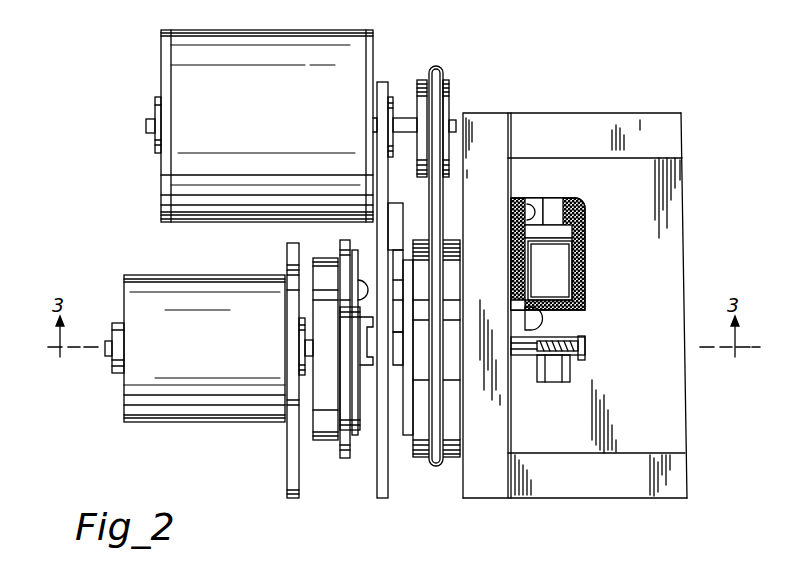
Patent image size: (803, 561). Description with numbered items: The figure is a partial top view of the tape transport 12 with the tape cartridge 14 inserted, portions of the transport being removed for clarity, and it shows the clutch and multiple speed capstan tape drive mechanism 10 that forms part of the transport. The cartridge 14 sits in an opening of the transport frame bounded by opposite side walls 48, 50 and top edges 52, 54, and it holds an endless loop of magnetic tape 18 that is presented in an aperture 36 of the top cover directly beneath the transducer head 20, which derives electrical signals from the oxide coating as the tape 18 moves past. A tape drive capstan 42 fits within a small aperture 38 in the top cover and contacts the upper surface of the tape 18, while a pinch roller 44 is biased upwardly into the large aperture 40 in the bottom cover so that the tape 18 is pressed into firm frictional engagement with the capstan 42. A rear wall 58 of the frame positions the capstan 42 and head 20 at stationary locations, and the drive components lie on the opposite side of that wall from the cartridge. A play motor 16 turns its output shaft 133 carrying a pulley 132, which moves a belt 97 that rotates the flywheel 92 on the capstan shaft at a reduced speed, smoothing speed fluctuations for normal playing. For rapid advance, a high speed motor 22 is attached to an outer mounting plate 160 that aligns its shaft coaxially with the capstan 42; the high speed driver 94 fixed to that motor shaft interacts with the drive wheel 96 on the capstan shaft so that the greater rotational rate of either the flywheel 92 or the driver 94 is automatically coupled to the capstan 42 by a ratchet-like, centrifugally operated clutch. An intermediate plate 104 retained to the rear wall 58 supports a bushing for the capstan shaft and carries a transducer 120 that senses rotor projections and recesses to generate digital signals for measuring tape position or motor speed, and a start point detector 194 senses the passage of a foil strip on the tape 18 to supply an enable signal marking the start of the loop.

The clutch and multiple speed capstan tape drive mechanism 10 is at (337, 492).
The tape transport 12 is at (490, 128).
The tape cartridge 14 is at (573, 314).
The play motor 16 is at (162, 72).
The magnetic tape 18 is at (552, 210).
The transducer head 20 is at (557, 288).
The rapid advance motor 22 is at (205, 410).
The aperture 36 is at (570, 232).
The small aperture 38 is at (570, 368).
The large aperture 40 is at (572, 361).
The tape drive capstan 42 is at (580, 348).
The pinch roller 44 is at (560, 343).
The side wall 48 is at (642, 498).
The side wall 50 is at (597, 292).
The top edge 52 is at (672, 475).
The top edge 54 is at (670, 151).
The rear wall 58 is at (465, 493).
The flywheel 92 is at (452, 437).
The high speed driver 94 is at (330, 245).
The drive wheel 96 is at (352, 380).
The belt 97 is at (439, 222).
The intermediate plate 104 is at (382, 84).
The transducer 120 is at (392, 224).
The pulley 132 is at (446, 80).
The output shaft 133 is at (404, 122).
The outer mounting plate 160 is at (287, 472).
The start point detector 194 is at (571, 299).